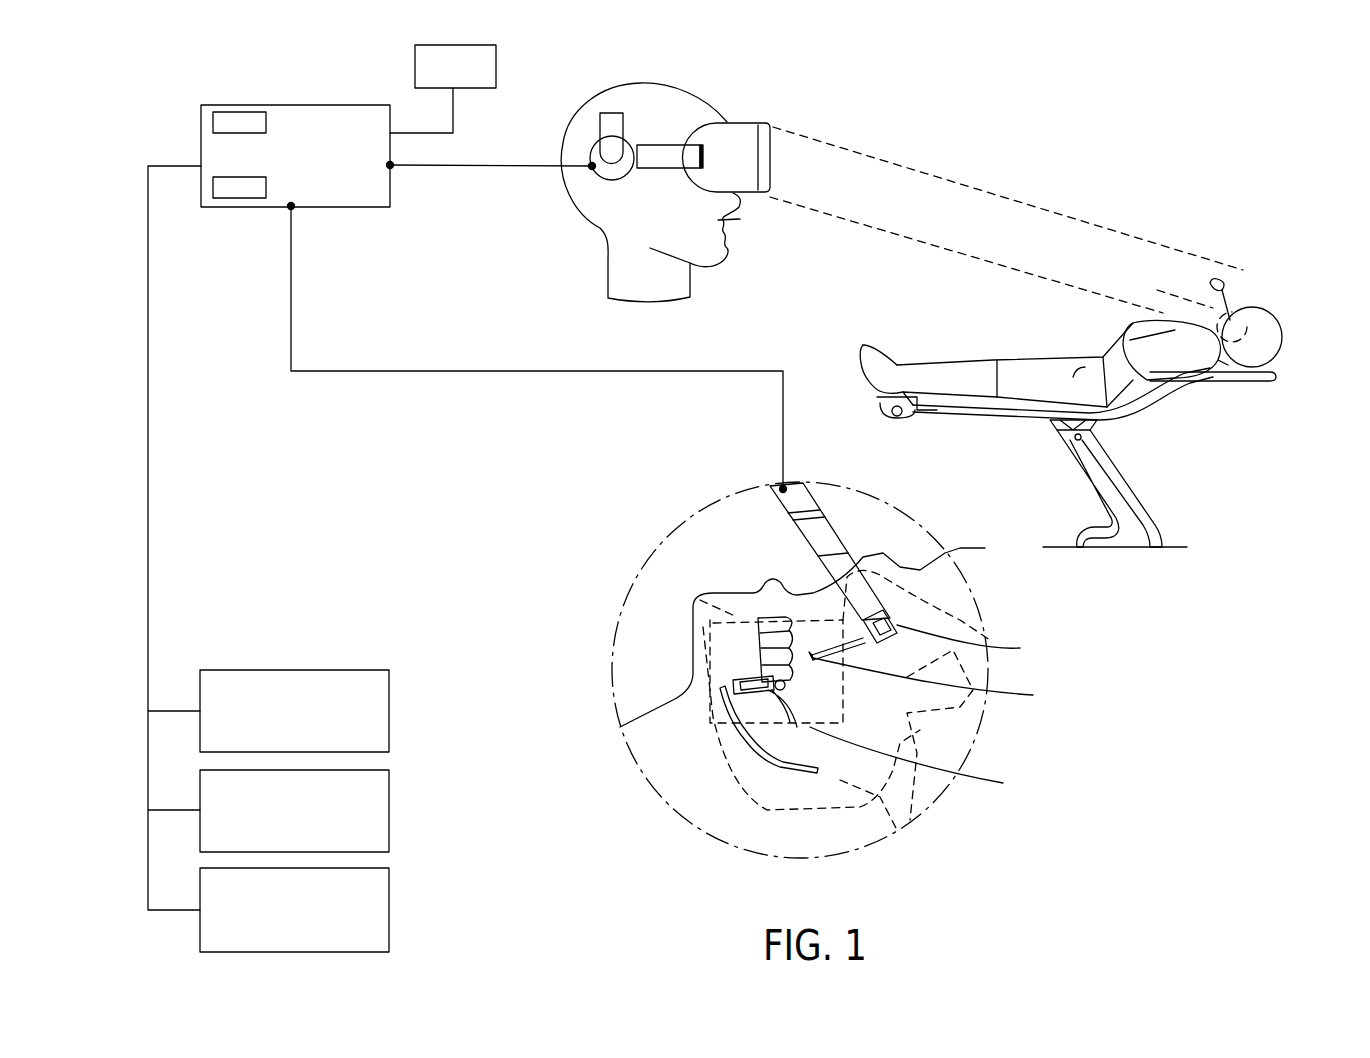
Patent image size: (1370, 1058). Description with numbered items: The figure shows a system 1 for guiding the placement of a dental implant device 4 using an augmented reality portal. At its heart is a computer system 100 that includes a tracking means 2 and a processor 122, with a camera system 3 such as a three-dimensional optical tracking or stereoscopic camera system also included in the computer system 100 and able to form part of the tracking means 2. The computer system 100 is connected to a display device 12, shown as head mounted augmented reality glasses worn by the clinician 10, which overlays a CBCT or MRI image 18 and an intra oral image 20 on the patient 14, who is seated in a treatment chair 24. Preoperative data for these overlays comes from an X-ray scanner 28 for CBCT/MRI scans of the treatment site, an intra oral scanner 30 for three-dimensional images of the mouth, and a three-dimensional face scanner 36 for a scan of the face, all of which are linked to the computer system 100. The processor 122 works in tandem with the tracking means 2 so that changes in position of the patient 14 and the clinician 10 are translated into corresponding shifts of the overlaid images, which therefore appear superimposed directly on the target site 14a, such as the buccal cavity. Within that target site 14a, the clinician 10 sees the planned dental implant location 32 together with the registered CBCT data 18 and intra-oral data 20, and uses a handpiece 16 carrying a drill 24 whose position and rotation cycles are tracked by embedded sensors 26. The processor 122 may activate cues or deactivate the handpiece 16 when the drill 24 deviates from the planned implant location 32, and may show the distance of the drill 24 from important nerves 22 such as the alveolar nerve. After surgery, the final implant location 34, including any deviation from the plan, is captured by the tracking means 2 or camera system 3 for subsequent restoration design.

The system 1 is at (1133, 150).
The tracking means 2 is at (232, 198).
The camera system 3 is at (496, 65).
The dental implant device 4 is at (740, 680).
The clinician 10 is at (563, 152).
The display device 12 is at (750, 122).
The patient 14 is at (1023, 357).
The target site 14a is at (1237, 302).
The handpiece 16 is at (813, 503).
The CBCT or MRI image 18 is at (700, 600).
The intra oral image 20 is at (924, 764).
The nerves 22 is at (735, 728).
The treatment chair / drill 24 is at (1160, 517).
The embedded sensors 26 is at (975, 643).
The X-ray scanner 28 is at (389, 711).
The intra oral scanner 30 is at (389, 816).
The planned dental implant location 32 is at (877, 797).
The final implant location 34 is at (727, 710).
The 3D face scanner 36 is at (389, 913).
The computer system 100 is at (293, 105).
The processor 122 is at (228, 112).